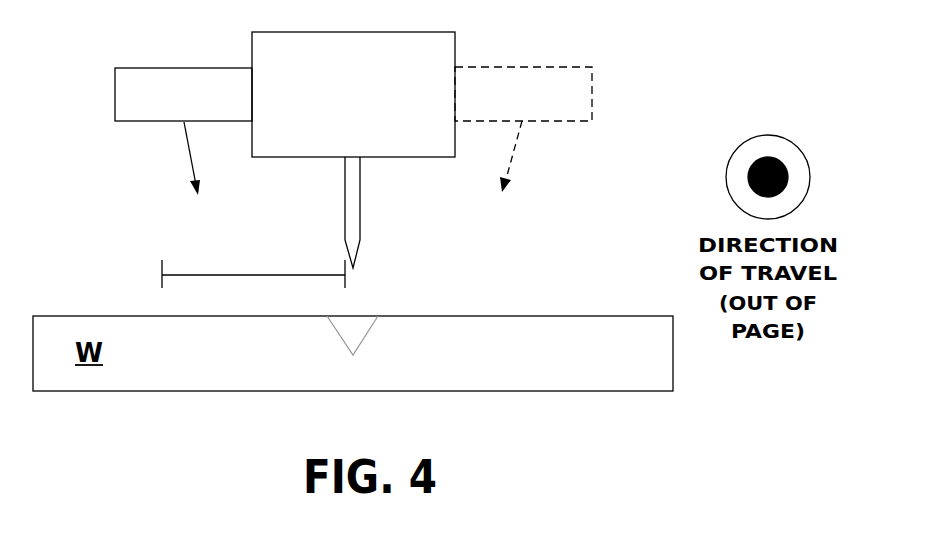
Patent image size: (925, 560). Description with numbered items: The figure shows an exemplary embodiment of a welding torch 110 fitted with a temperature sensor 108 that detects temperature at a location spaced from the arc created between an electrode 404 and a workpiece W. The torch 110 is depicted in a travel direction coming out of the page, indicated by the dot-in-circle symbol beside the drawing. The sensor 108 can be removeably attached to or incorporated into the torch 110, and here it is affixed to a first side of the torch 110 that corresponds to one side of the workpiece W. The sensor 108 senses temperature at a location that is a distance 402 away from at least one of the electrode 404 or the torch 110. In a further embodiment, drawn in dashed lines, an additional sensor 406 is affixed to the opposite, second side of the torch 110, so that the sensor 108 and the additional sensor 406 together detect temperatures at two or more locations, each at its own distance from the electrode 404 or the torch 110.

The temperature sensor 108 is at (183, 68).
The welding torch 110 is at (371, 118).
The distance 402 is at (252, 275).
The electrode 404 is at (360, 210).
The additional sensor 406 is at (545, 67).